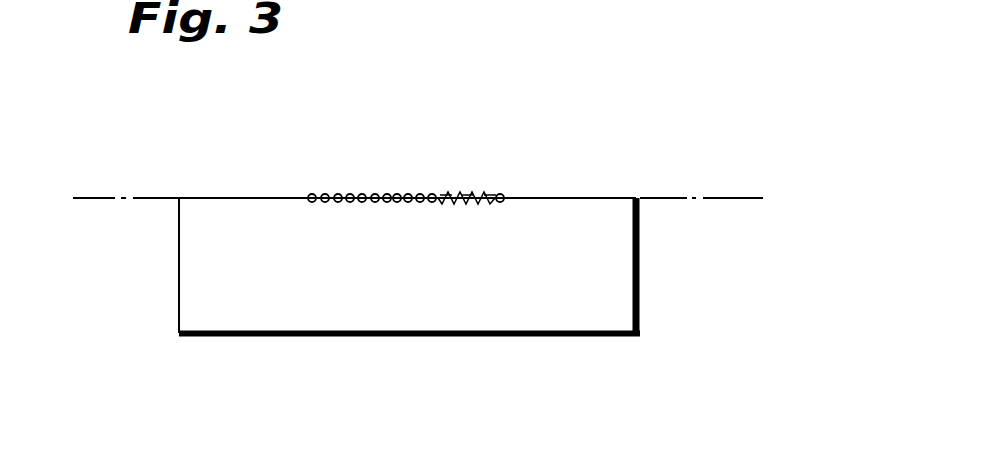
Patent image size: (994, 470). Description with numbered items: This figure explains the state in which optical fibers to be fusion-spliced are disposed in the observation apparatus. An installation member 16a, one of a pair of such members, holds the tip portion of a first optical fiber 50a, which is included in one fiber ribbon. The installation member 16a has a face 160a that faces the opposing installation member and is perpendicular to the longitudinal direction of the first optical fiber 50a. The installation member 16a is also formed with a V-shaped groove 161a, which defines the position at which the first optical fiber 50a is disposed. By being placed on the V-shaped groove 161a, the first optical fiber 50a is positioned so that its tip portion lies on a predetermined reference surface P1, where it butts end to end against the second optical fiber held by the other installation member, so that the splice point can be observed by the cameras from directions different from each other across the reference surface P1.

The reference surface P1 is at (712, 200).
The face 160a is at (422, 300).
The installation member 16a is at (640, 290).
The V-shaped groove 161a is at (468, 203).
The first optical fiber 50a is at (510, 189).